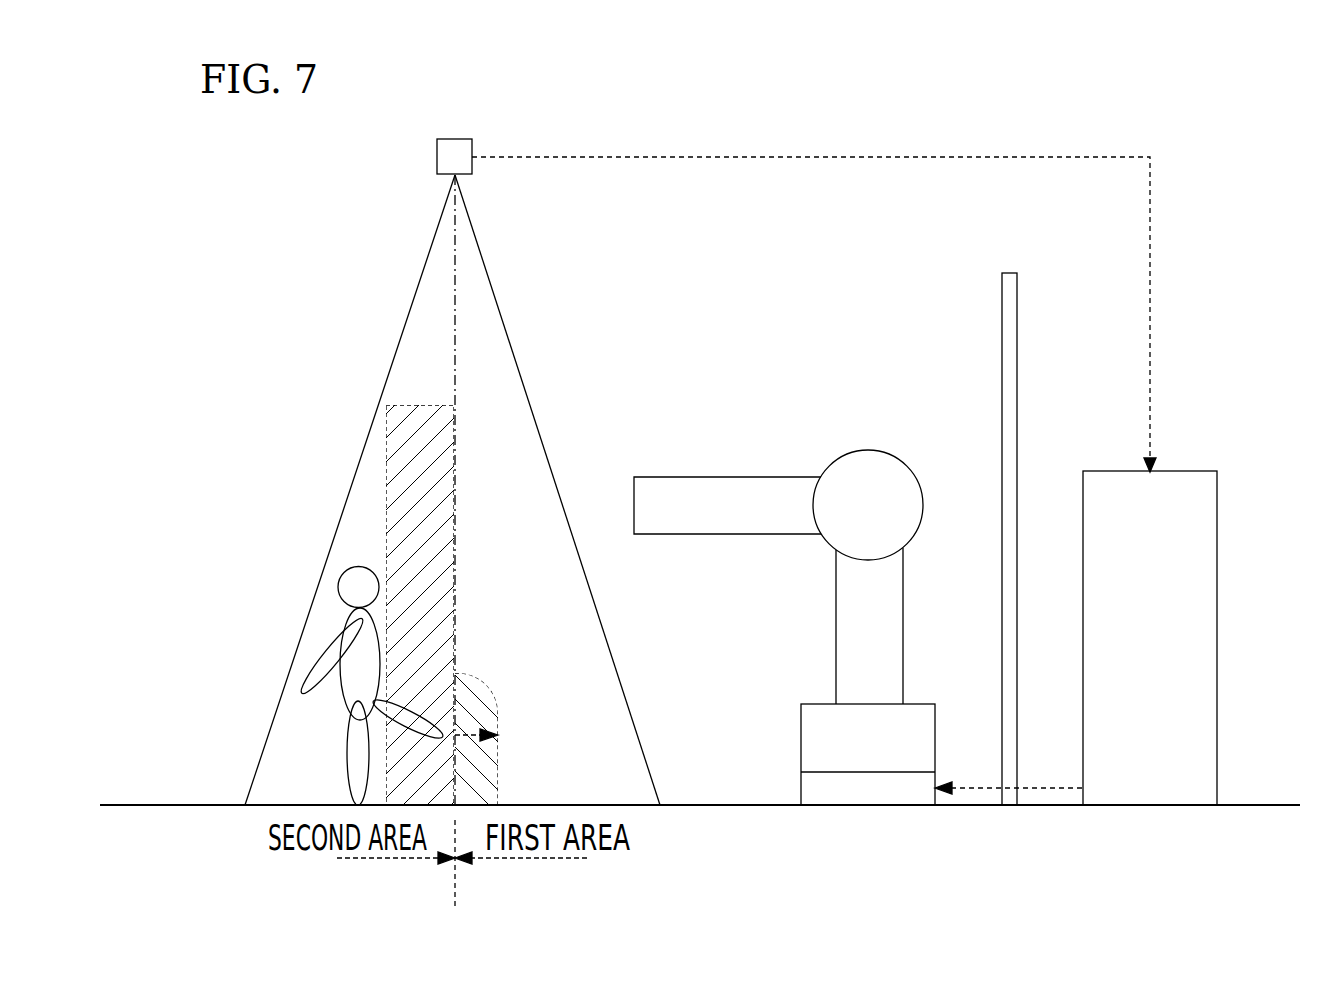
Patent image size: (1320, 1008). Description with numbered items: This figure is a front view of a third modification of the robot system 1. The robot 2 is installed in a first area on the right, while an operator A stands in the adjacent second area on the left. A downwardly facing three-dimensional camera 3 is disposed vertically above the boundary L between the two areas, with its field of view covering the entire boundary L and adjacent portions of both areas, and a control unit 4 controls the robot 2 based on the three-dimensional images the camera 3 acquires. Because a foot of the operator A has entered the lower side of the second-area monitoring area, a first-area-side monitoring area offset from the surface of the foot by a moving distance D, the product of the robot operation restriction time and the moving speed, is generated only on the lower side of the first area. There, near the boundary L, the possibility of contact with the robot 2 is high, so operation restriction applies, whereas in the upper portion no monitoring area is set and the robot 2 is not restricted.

The robot system 1 is at (1172, 91).
The robot 2 is at (720, 476).
The three-dimensional camera 3 is at (437, 155).
The control unit 4 is at (1218, 521).
The boundary L is at (452, 268).
The operator A is at (338, 585).
The moving distance D is at (470, 735).